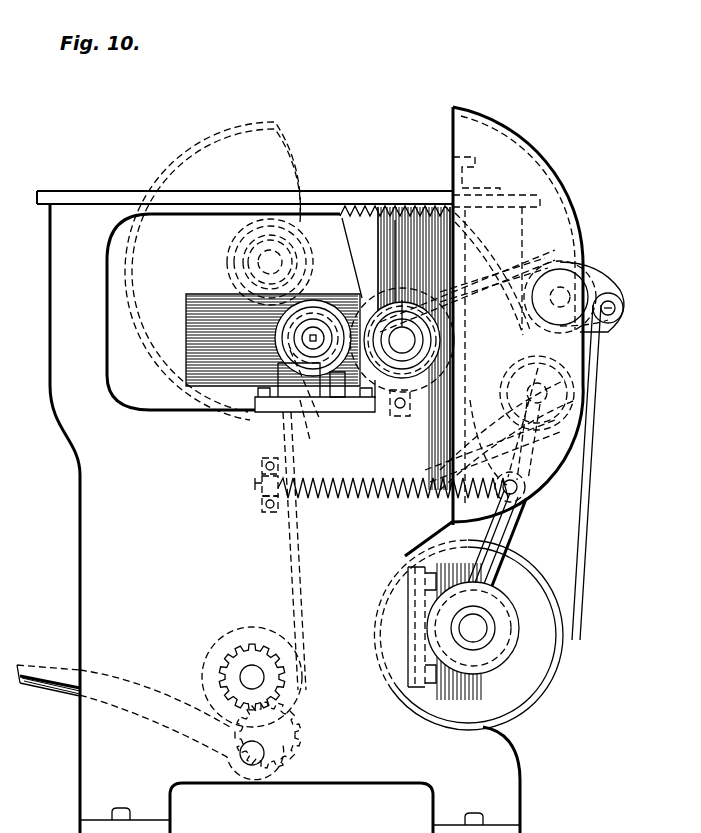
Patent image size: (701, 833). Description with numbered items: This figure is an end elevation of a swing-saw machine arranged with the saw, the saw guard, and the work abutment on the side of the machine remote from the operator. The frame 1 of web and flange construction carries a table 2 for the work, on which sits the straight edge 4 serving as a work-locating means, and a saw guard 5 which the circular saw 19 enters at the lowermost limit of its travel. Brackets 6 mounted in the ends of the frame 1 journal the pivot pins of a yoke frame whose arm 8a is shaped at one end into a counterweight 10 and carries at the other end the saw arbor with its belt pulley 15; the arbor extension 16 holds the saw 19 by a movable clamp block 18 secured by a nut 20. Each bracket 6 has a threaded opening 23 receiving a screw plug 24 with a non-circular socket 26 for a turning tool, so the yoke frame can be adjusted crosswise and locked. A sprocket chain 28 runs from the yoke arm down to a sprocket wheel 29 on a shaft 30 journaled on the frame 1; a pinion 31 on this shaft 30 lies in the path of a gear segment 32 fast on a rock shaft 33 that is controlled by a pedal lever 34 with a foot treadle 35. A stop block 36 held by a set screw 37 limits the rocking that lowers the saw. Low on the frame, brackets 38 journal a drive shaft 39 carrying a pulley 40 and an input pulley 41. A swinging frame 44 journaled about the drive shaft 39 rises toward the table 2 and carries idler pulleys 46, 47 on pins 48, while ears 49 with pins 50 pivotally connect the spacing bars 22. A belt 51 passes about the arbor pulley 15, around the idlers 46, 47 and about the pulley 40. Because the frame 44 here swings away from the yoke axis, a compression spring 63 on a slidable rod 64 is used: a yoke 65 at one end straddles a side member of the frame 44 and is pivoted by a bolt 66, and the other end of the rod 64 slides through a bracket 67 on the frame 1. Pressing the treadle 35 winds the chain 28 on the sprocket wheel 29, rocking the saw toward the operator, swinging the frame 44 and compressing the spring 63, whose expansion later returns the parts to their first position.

The frame 1 is at (85, 567).
The table 2 is at (100, 200).
The straight edge 4 is at (462, 160).
The saw guard 5 is at (545, 170).
The bracket 6 is at (266, 412).
The arm of yoke frame 8a is at (355, 300).
The counterweight 10 is at (273, 302).
The belt pulley 15 is at (428, 322).
The arbor extension 16 is at (402, 340).
The movable clamp block 18 is at (432, 354).
The circular saw 19 is at (418, 232).
The nut 20 is at (410, 312).
The spacing bar 22 is at (467, 291).
The threaded opening 23 is at (302, 342).
The screw plug 24 is at (308, 336).
The non-circular socket 26 is at (315, 334).
The sprocket chain 28 is at (292, 548).
The sprocket wheel 29 is at (262, 630).
The shaft 30 is at (250, 677).
The pinion 31 is at (286, 677).
The gear segment 32 is at (302, 740).
The rock shaft 33 is at (252, 766).
The pedal lever 34 is at (148, 720).
The foot treadle 35 is at (52, 668).
The block 36 is at (393, 412).
The set screw 37 is at (392, 438).
The bracket 38 is at (420, 600).
The drive shaft 39 is at (478, 628).
The pulley 40 is at (542, 695).
The pulley 41 is at (500, 660).
The swinging frame 44 is at (530, 520).
The idler pulley 46 is at (587, 275).
The idler pulley 47 is at (580, 392).
The pin 48 is at (548, 370).
The ear 49 is at (622, 300).
The pin 50 is at (618, 312).
The belt 51 is at (472, 288).
The compression spring 63 is at (352, 500).
The slidable rod 64 is at (258, 492).
The yoke 65 is at (524, 478).
The bolt 66 is at (518, 497).
The bracket 67 is at (260, 466).